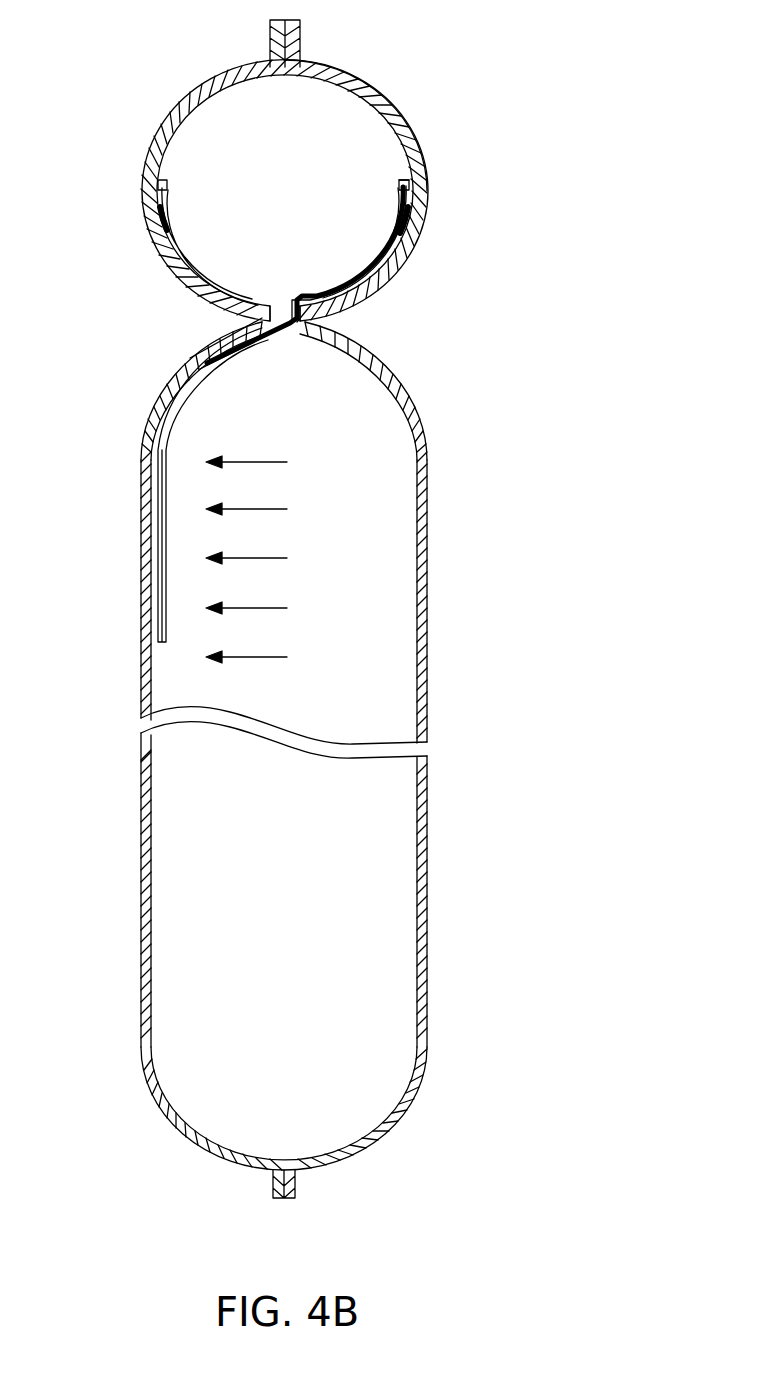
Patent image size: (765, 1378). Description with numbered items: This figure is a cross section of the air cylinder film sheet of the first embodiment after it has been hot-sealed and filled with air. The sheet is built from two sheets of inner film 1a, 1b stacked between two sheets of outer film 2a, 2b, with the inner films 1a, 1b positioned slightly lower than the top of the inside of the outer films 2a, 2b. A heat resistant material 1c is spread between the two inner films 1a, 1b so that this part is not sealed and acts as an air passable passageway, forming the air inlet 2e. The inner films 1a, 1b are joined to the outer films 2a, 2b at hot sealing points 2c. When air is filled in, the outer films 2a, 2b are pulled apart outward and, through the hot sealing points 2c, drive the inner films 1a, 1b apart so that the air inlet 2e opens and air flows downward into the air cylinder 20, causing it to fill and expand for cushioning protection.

The outer film 2a is at (162, 130).
The outer film 2b is at (403, 126).
The inner film 1a is at (165, 188).
The inner film 1b is at (410, 196).
The heat resistant material 1c is at (410, 190).
The hot sealing points 2c is at (158, 222).
The air inlet 2e is at (279, 307).
The air cylinder 20 is at (383, 505).